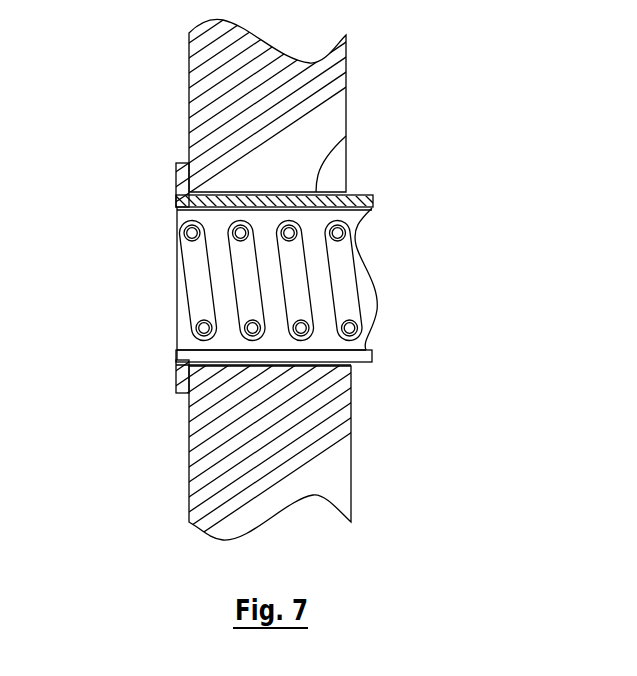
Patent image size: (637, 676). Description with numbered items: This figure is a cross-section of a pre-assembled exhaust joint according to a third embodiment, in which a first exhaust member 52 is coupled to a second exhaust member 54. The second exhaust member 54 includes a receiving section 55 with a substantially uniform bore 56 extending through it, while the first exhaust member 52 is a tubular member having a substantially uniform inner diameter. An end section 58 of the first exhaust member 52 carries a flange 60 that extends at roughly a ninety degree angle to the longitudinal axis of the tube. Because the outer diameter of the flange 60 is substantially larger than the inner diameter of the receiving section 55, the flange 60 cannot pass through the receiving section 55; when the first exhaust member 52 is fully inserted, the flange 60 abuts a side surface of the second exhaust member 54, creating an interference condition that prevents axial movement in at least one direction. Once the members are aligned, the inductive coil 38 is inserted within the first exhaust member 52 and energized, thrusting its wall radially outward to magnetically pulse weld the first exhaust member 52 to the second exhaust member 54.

The inductive coil 38 is at (334, 272).
The first exhaust member 52 is at (373, 200).
The second exhaust member 54 is at (213, 446).
The receiving section 55 is at (346, 136).
The bore 56 is at (357, 365).
The end section 58 is at (191, 330).
The flange 60 is at (177, 187).